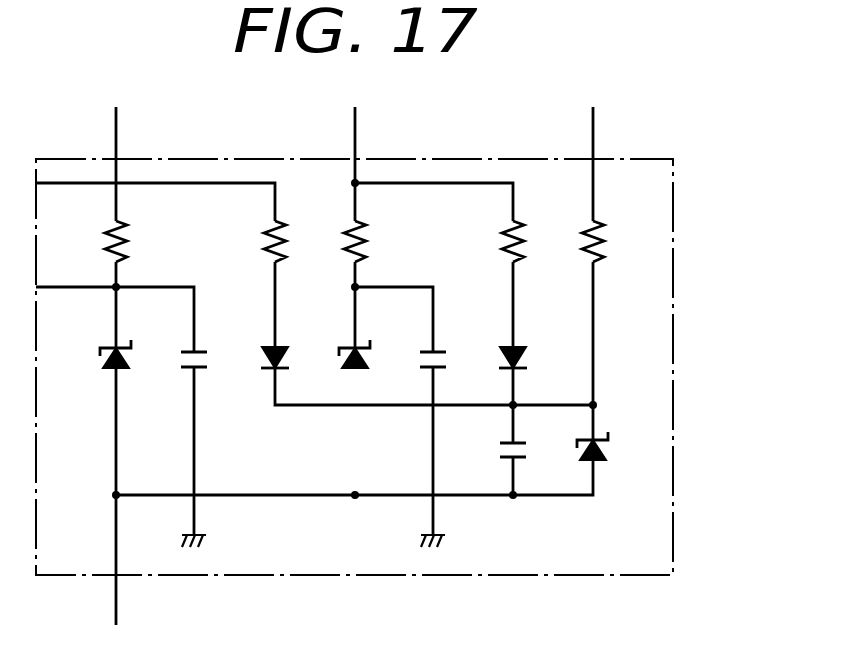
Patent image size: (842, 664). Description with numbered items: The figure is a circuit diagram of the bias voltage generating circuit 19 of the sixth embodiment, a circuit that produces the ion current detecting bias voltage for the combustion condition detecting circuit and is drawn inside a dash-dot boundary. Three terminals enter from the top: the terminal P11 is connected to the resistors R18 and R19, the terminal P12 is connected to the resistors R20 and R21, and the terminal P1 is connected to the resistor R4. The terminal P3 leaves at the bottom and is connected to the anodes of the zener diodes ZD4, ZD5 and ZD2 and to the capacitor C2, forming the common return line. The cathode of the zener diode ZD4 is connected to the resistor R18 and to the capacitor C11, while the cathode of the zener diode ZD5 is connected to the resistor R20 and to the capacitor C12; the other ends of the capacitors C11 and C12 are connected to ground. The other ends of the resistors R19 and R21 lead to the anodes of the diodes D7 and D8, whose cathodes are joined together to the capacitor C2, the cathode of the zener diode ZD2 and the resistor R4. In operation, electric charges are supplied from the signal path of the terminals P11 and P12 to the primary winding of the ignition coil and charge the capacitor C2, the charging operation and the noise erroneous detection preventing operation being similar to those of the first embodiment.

The bias voltage generating circuit 19 is at (651, 159).
The terminal P11 is at (118, 134).
The terminal P12 is at (357, 134).
The terminal P1 is at (595, 134).
The terminal P3 is at (118, 603).
The resistor R18 is at (135, 240).
The resistor R19 is at (294, 240).
The resistor R20 is at (372, 240).
The resistor R21 is at (531, 240).
The resistor R4 is at (609, 240).
The zener diode ZD4 is at (129, 348).
The zener diode ZD5 is at (368, 348).
The zener diode ZD2 is at (606, 446).
The diode D7 is at (281, 347).
The diode D8 is at (519, 347).
The capacitor C11 is at (214, 358).
The capacitor C12 is at (453, 358).
The capacitor C2 is at (500, 450).